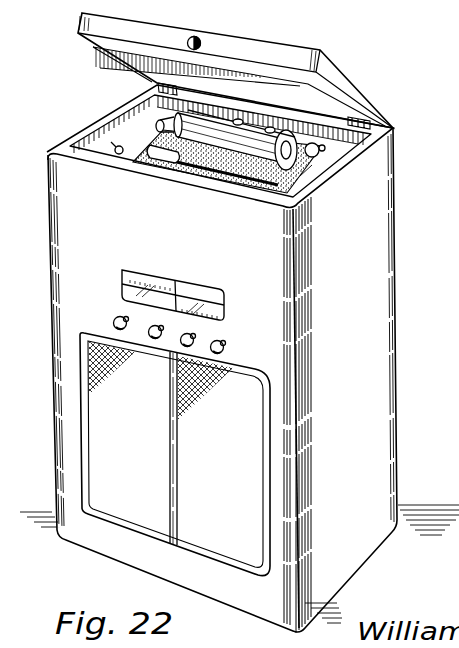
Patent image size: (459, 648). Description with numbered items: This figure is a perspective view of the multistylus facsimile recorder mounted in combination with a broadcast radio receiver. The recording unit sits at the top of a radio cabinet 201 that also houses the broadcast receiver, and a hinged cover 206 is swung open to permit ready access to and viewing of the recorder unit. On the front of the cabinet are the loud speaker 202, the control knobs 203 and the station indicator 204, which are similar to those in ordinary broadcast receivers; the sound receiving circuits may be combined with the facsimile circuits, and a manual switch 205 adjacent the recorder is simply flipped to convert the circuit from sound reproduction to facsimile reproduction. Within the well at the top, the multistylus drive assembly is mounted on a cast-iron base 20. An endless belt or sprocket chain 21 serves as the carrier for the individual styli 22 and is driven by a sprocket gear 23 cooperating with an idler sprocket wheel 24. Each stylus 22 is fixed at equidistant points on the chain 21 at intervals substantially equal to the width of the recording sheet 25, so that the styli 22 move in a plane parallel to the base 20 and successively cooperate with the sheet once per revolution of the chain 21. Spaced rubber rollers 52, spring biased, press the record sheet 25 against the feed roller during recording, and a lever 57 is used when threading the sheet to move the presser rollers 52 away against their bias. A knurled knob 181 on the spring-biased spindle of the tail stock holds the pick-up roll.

The cast-iron base 20 is at (318, 187).
The endless belt or sprocket chain 21 is at (210, 173).
The styli 22 is at (237, 151).
The sprocket gear 23 is at (239, 141).
The idler sprocket wheel 24 is at (170, 150).
The recording sheet 25 is at (269, 128).
The rubber rollers 52 is at (243, 122).
The lever 57 is at (305, 182).
The knurled knob 181 is at (360, 123).
The radio cabinet 201 is at (383, 287).
The loud speaker 202 is at (240, 384).
The control knobs 203 is at (155, 338).
The station indicator 204 is at (123, 288).
The manual switch 205 is at (113, 146).
The hinged cover 206 is at (362, 93).